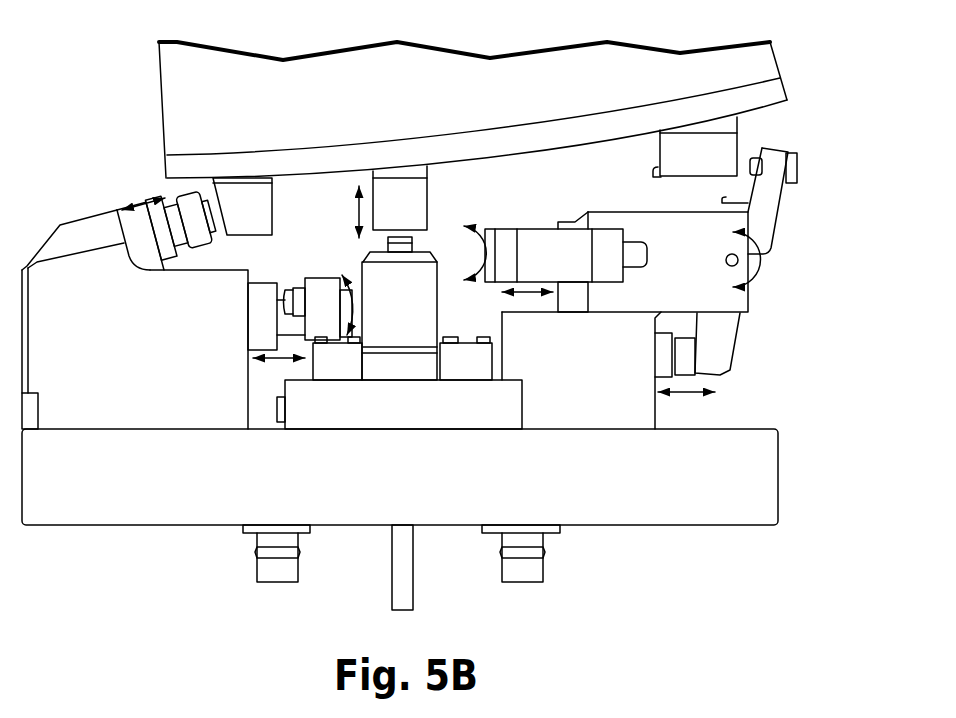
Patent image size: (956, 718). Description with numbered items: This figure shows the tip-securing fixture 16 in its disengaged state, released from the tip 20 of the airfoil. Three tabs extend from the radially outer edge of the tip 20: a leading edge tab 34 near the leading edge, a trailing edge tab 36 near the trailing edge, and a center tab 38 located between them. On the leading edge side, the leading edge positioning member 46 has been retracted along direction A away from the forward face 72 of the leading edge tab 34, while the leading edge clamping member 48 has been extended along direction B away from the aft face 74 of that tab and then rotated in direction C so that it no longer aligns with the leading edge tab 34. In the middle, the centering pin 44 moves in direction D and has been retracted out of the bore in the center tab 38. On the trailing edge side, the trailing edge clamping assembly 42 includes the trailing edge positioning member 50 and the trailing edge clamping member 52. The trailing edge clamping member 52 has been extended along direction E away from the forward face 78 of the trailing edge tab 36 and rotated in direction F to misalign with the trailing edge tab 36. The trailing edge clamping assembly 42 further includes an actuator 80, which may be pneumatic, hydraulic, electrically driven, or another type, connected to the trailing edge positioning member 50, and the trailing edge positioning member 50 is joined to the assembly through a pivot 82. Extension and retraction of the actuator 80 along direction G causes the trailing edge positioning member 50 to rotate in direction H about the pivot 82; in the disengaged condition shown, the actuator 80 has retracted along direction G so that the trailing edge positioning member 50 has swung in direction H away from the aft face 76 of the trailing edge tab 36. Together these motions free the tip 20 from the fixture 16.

The tip-securing fixture 16 is at (793, 297).
The tip 20 is at (160, 128).
The leading edge tab 34 is at (243, 195).
The trailing edge tab 36 is at (702, 155).
The center tab 38 is at (417, 187).
The trailing edge clamping assembly 42 is at (765, 281).
The centering pin 44 is at (413, 243).
The leading edge positioning member 46 is at (201, 243).
The leading edge clamping member 48 is at (315, 277).
The trailing edge positioning member 50 is at (783, 200).
The trailing edge clamping member 52 is at (530, 243).
The forward face 72 is at (211, 192).
The aft face 74 is at (273, 200).
The aft face 76 is at (737, 135).
The forward face 78 is at (653, 186).
The actuator 80 is at (680, 375).
The pivot 82 is at (725, 260).
The direction A is at (144, 196).
The direction B is at (283, 360).
The direction C is at (353, 301).
The direction D is at (358, 211).
The direction E is at (506, 295).
The direction F is at (478, 256).
The direction G is at (683, 394).
The direction H is at (761, 260).